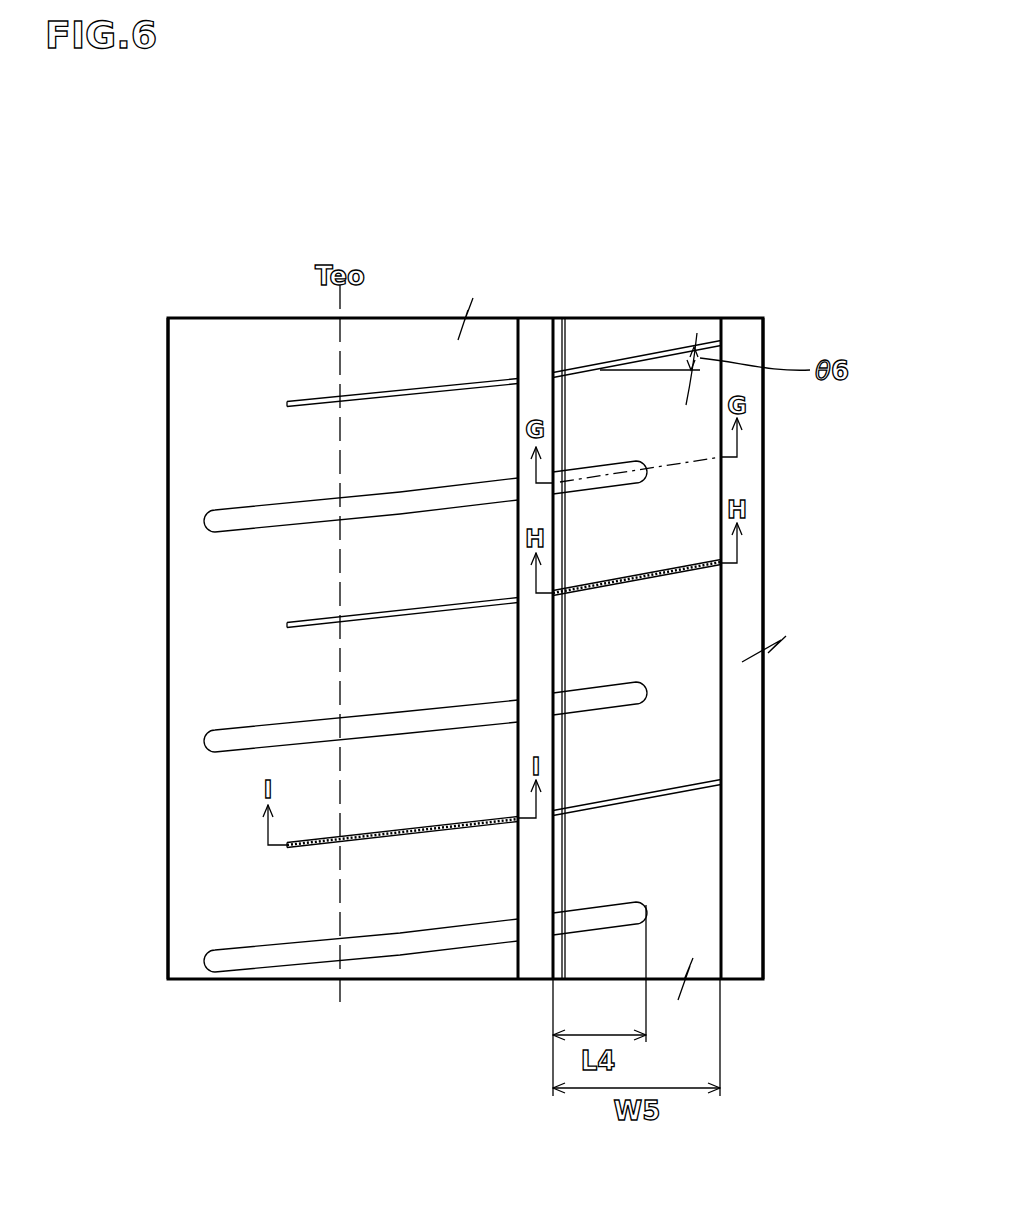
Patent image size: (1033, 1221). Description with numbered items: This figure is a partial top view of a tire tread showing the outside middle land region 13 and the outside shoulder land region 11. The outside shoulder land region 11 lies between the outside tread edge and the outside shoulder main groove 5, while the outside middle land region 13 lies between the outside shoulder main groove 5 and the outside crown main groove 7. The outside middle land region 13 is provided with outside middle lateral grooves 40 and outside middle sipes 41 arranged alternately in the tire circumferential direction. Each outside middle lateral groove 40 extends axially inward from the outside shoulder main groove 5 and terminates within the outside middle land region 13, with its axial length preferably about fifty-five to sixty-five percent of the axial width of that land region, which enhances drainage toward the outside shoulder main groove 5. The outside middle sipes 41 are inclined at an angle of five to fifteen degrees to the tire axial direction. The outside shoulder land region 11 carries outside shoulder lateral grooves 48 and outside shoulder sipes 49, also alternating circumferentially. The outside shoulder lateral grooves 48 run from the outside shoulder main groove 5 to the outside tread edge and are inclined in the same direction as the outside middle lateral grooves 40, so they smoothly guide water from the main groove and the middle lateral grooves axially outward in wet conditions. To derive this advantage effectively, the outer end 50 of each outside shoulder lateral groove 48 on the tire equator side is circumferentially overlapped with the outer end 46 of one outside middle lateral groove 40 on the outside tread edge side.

The outside shoulder main groove 5 is at (537, 357).
The crown main groove 7 is at (742, 353).
The outside shoulder land region 11 is at (422, 357).
The outside middle land region 13 is at (613, 348).
The outside middle lateral groove 40 is at (602, 482).
The outside middle sipe 41 is at (647, 357).
The outer end 46 is at (548, 923).
The outside shoulder lateral groove 48 is at (415, 508).
The outside shoulder sipe 49 is at (418, 393).
The outer end 50 is at (522, 927).